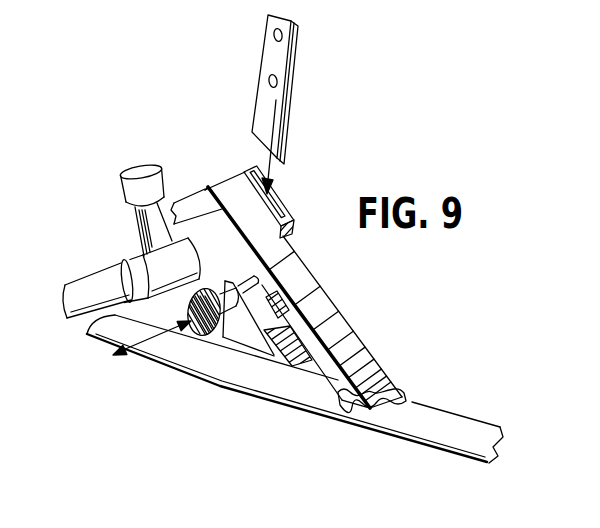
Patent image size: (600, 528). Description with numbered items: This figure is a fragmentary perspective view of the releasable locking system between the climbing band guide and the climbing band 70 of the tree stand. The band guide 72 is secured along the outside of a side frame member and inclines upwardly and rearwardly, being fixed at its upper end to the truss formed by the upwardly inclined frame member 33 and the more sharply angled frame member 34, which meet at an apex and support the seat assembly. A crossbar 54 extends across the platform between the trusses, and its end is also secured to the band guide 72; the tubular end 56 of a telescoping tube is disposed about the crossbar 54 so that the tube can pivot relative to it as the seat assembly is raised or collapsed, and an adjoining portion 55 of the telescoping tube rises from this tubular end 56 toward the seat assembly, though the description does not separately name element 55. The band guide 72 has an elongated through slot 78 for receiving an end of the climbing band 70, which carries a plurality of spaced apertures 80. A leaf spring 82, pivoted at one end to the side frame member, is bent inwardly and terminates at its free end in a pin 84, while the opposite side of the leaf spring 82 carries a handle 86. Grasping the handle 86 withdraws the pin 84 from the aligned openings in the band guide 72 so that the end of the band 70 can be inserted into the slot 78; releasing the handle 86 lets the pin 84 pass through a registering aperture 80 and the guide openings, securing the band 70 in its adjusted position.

The upwardly inclined frame member 33 is at (199, 197).
The sharply angled frame member 34 is at (348, 336).
The crossbar 54 is at (77, 288).
The branch tube 55 is at (122, 171).
The tubular ends 56 is at (138, 257).
The climbing band 70 is at (289, 111).
The band guide 72 is at (240, 339).
The elongated through slot 78 is at (253, 173).
The apertures 80 is at (248, 50).
The leaf spring 82 is at (259, 352).
The pin 84 is at (273, 274).
The handle 86 is at (190, 334).